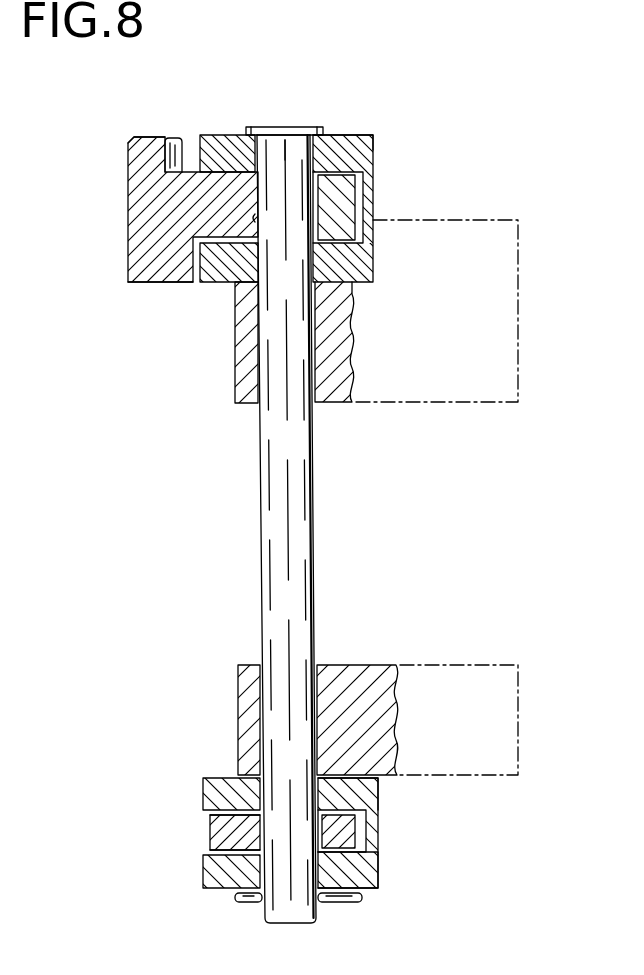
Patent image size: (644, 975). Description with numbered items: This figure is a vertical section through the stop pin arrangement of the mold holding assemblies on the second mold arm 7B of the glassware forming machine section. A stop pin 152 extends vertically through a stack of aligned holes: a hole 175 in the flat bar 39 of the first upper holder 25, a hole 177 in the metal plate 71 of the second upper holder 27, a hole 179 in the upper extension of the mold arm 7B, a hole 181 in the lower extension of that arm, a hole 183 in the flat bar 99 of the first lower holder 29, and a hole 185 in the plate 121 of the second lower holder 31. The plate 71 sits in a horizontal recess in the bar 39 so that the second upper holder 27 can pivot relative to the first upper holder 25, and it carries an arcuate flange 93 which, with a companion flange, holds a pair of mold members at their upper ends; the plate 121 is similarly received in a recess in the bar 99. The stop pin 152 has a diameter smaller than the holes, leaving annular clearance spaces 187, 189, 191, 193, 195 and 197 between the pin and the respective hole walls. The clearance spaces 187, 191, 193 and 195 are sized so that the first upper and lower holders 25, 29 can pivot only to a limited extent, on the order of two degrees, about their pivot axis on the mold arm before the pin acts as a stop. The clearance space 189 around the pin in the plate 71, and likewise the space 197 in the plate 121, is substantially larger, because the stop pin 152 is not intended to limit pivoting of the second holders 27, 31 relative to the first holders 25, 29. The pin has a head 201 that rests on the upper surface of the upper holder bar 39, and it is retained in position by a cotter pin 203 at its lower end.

The first upper holder 25 is at (377, 134).
The second upper holder 27 is at (125, 200).
The first lower holder 29 is at (378, 872).
The second lower holder 31 is at (210, 832).
The flat bar 39 is at (347, 138).
The metal plate 71 is at (157, 283).
The second mold arm 7B is at (520, 344).
The arcuate flange 93 is at (153, 137).
The flat bar 99 is at (378, 810).
The plate 121 is at (208, 822).
The stop pin 152 is at (312, 580).
The hole 175 is at (303, 137).
The hole 177 is at (316, 215).
The hole 179 is at (318, 338).
The hole 181 is at (320, 703).
The hole 183 is at (315, 792).
The hole 185 is at (318, 846).
The annular clearance space 187 is at (253, 160).
The annular clearance space 189 is at (252, 225).
The annular clearance space 191 is at (257, 360).
The annular clearance space 193 is at (258, 700).
The annular clearance space 195 is at (240, 778).
The annular clearance space 197 is at (212, 849).
The head 201 is at (273, 127).
The cotter pin 203 is at (340, 905).